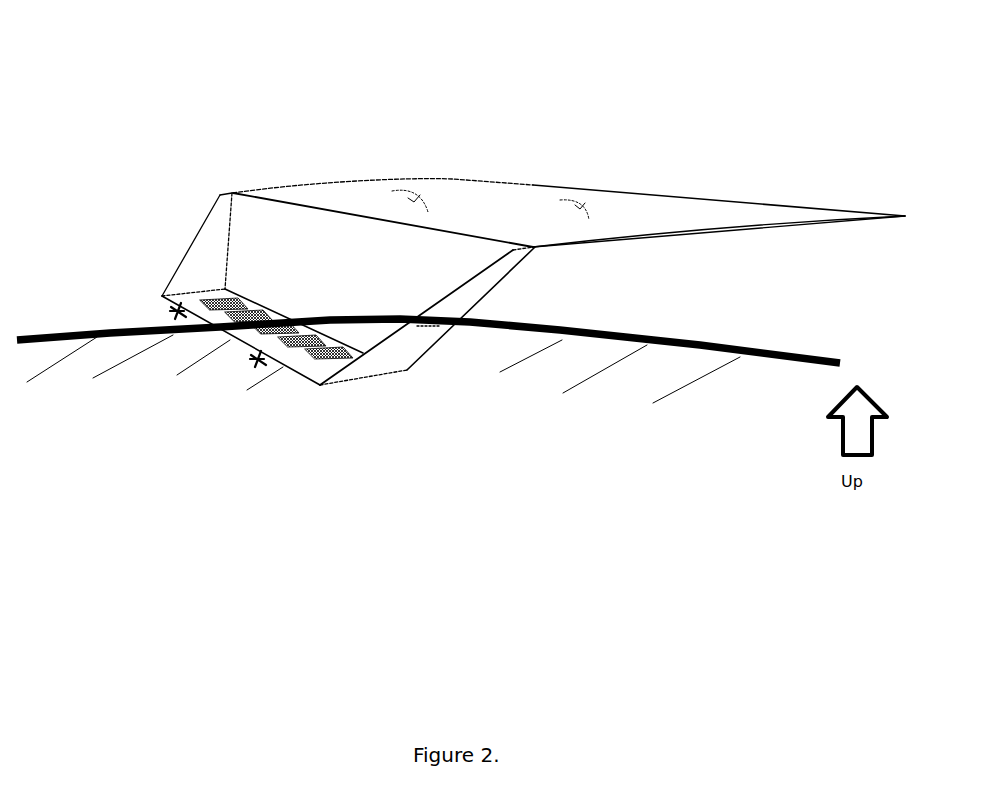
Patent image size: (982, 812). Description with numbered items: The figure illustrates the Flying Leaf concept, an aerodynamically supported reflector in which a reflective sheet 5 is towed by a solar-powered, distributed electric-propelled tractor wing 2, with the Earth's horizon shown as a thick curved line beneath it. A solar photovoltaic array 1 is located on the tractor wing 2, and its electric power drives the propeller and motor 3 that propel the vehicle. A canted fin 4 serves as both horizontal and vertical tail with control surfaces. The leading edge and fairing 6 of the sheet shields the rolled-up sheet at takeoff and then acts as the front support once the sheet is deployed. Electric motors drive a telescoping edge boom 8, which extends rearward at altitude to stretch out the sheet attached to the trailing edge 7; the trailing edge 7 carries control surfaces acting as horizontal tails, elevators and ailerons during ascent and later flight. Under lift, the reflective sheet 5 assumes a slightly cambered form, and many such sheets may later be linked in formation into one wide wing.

The solar photovoltaic array 1 is at (222, 296).
The tractor wing 2 is at (214, 323).
The propeller and motor 3 is at (252, 365).
The canted fin 4 is at (412, 345).
The reflective sheet 5 is at (450, 172).
The leading edge and fairing 6 is at (317, 208).
The trailing edge 7 is at (822, 208).
The telescoping edge boom 8 is at (635, 225).